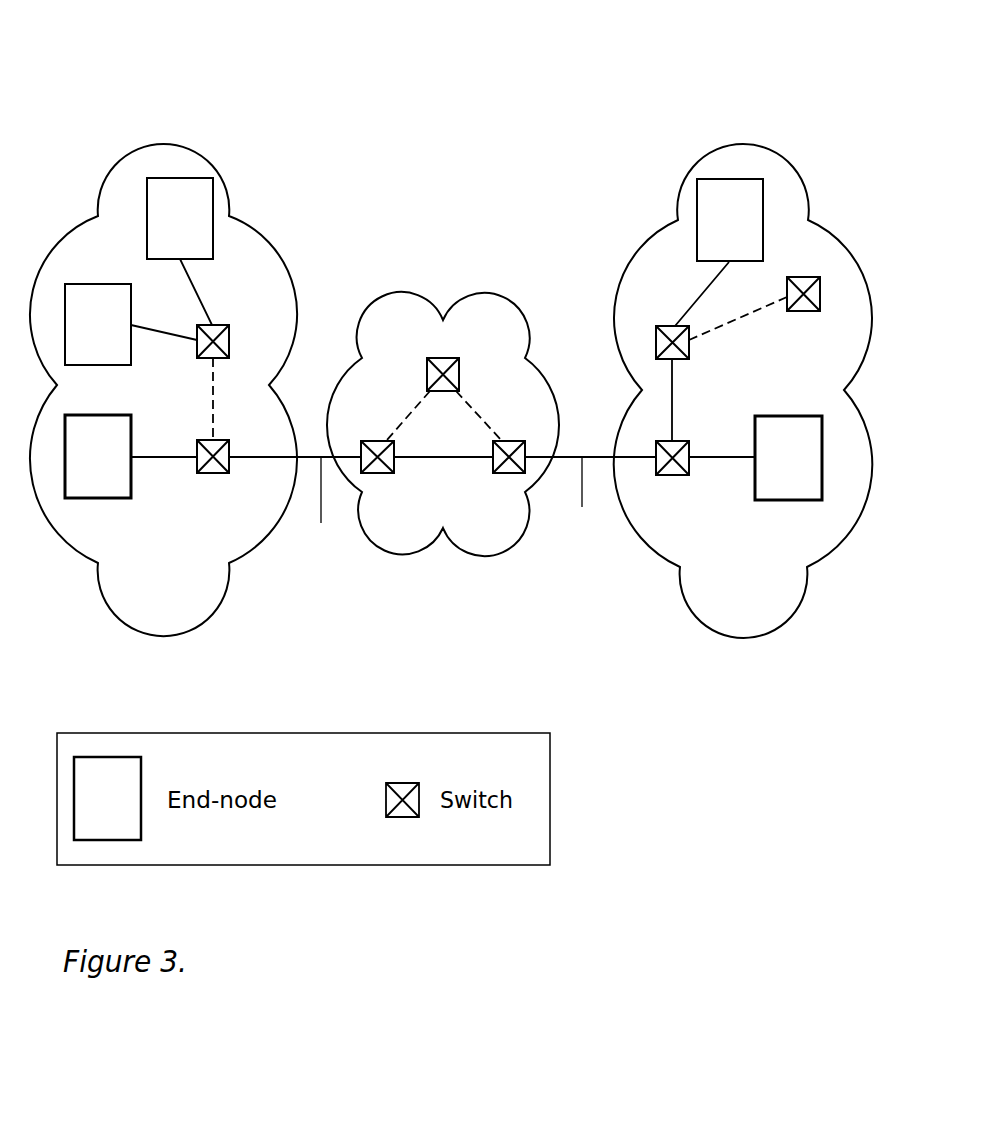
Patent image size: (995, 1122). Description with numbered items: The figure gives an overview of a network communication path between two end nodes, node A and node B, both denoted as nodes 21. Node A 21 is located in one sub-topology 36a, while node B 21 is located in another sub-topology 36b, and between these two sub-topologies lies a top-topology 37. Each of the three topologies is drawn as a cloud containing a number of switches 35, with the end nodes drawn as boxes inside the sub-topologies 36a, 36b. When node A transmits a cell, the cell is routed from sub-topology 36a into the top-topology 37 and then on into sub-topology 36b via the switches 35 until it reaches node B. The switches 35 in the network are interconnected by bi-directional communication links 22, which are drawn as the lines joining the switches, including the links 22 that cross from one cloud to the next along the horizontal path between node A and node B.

The node 21 is at (732, 178).
The bi-directional communication link 22 is at (435, 459).
The switch 35 is at (230, 340).
The sub-topology 36a is at (237, 262).
The sub-topology 36b is at (779, 210).
The top-topology 37 is at (468, 308).